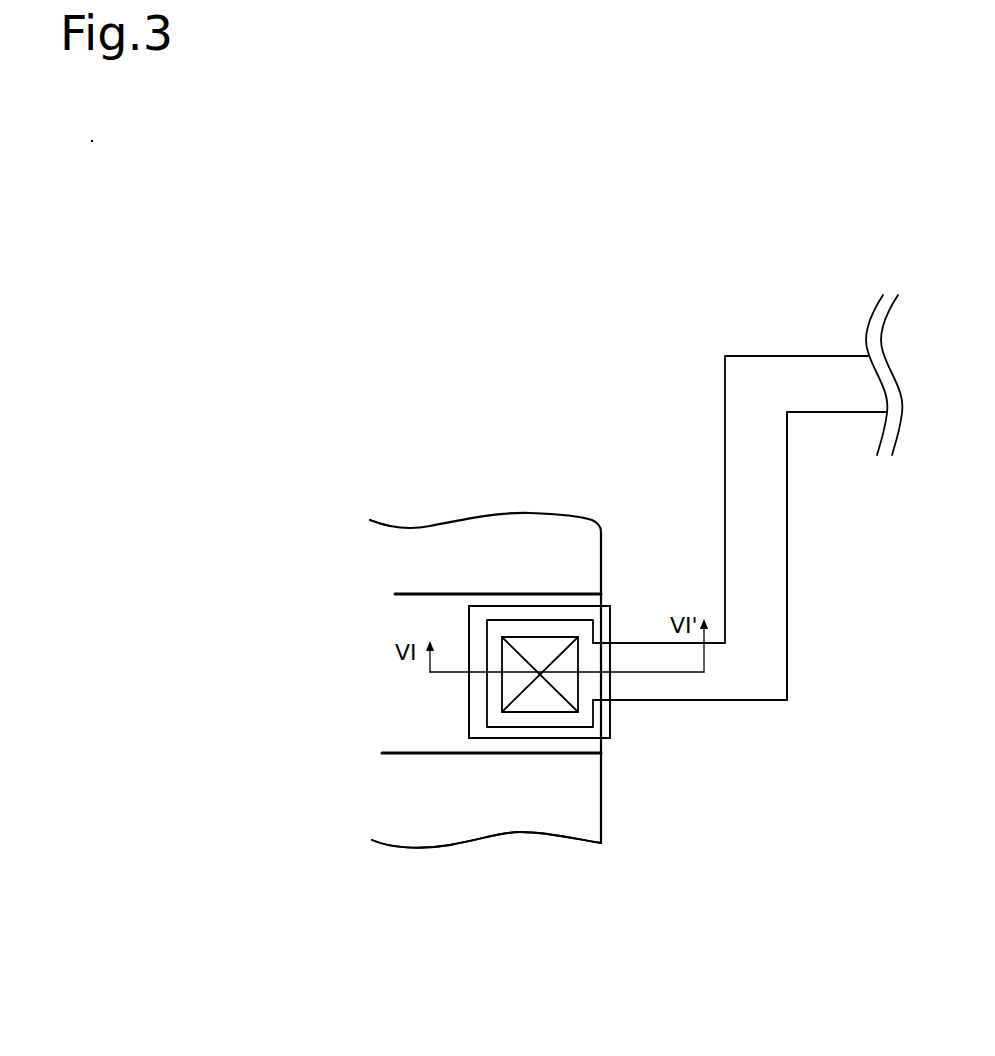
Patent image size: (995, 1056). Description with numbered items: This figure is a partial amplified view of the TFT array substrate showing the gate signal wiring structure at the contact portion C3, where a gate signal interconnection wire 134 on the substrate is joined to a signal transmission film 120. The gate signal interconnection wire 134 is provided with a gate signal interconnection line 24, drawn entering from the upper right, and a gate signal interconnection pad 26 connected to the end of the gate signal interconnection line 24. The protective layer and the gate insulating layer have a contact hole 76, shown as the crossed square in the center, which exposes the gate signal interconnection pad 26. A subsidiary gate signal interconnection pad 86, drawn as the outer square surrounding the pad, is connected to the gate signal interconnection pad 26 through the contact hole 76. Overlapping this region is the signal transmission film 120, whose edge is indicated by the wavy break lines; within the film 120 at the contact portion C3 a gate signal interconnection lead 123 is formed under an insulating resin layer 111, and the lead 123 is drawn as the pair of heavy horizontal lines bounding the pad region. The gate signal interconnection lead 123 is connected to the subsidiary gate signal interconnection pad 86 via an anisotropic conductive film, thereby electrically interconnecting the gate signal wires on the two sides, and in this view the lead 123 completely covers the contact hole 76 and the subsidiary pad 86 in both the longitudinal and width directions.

The insulating resin layer 111 is at (555, 833).
The data signal transmission film 120 is at (485, 845).
The gate signal interconnection lead 123 is at (388, 754).
The contact portion C3 is at (528, 585).
The subsidiary gate signal interconnection pad 86 is at (470, 710).
The gate signal interconnection pad 26 is at (527, 727).
The contact hole 76 is at (557, 713).
The gate signal interconnection line 24 is at (745, 708).
The gate signal interconnection wire 134 is at (797, 550).